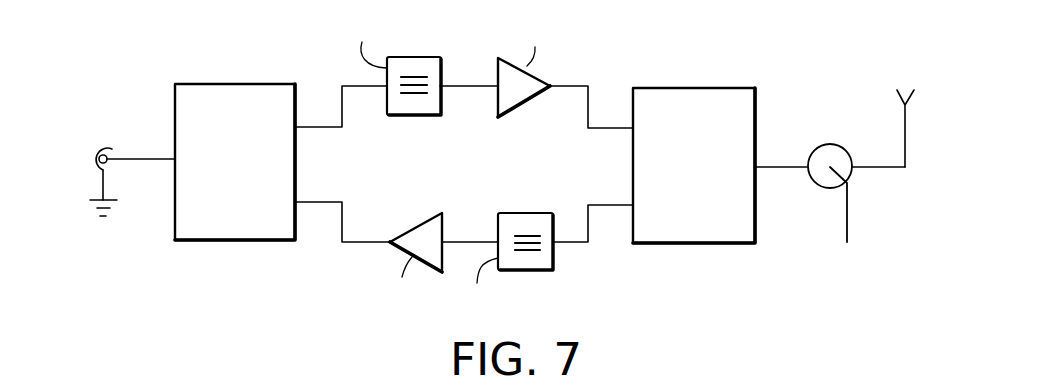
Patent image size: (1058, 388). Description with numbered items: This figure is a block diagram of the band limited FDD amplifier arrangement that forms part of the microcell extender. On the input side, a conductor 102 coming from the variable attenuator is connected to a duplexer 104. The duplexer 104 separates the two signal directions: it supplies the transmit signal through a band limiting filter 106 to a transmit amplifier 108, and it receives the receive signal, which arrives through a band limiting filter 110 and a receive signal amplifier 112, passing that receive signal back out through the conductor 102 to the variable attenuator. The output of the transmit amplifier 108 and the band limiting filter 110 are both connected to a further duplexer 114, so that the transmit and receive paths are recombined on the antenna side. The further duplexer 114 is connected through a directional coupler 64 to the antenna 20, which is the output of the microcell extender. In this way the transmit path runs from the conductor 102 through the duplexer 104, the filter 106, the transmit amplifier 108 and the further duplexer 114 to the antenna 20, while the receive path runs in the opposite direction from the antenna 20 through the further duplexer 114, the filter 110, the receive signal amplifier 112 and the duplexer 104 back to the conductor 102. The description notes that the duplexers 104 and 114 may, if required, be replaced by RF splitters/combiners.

The conductor 102 is at (130, 157).
The duplexer 104 is at (227, 242).
The band limiting filter 106 is at (435, 118).
The transmit amplifier 108 is at (532, 101).
The band limiting filter 110 is at (537, 213).
The receive signal amplifier 112 is at (422, 220).
The further duplexer 114 is at (695, 247).
The directional coupler 64 is at (831, 143).
The antenna 20 is at (903, 130).